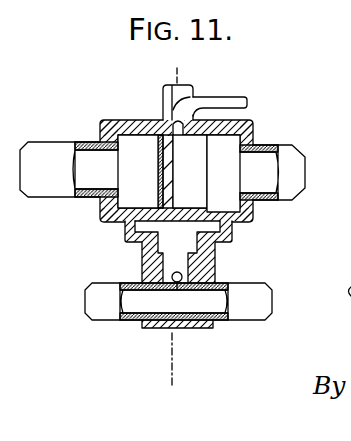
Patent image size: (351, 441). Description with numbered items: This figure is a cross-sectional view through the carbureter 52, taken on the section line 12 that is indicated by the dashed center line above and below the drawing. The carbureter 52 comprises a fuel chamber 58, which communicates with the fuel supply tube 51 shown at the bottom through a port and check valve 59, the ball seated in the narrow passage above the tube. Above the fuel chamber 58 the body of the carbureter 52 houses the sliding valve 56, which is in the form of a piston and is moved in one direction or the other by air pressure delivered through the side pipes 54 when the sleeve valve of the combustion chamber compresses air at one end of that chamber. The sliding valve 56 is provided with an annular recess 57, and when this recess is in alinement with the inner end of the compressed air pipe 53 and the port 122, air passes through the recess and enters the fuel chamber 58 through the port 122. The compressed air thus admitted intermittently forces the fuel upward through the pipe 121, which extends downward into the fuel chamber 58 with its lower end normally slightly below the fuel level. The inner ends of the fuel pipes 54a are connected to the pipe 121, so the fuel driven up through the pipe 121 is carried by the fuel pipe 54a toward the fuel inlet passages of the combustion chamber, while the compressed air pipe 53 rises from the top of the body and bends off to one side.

The section line 12 is at (173, 229).
The tube 51 is at (250, 317).
The carbureter 52 is at (107, 120).
The compressed air pipe 53 is at (217, 107).
The pipe 54 is at (52, 188).
The fuel pipe 54a is at (183, 87).
The sliding valve 56 is at (200, 160).
The annular recess 57 is at (160, 137).
The fuel chamber 58 is at (207, 265).
The check valve 59 is at (170, 284).
The pipe 121 is at (182, 232).
The port 122 is at (178, 213).